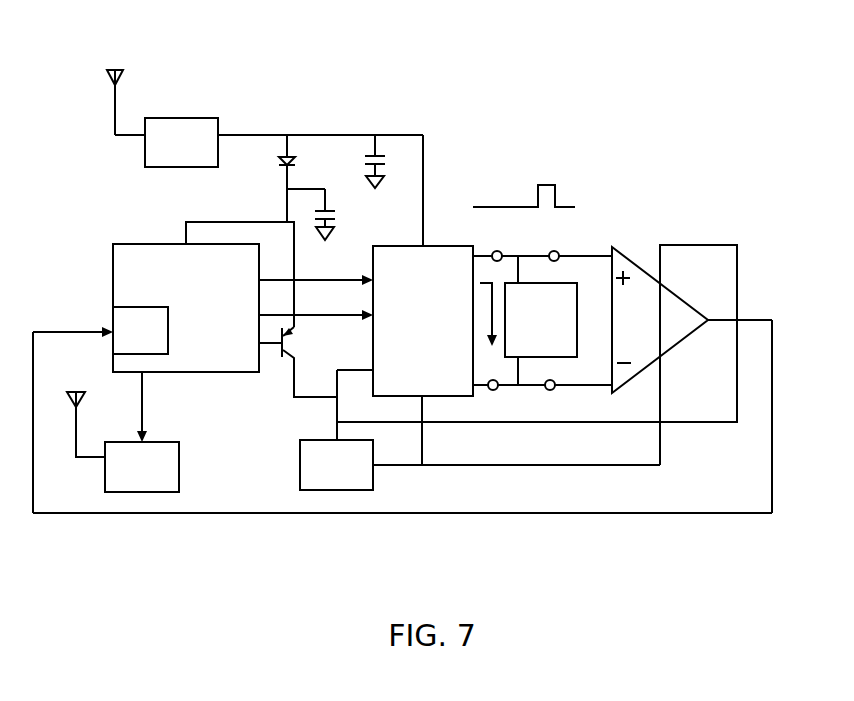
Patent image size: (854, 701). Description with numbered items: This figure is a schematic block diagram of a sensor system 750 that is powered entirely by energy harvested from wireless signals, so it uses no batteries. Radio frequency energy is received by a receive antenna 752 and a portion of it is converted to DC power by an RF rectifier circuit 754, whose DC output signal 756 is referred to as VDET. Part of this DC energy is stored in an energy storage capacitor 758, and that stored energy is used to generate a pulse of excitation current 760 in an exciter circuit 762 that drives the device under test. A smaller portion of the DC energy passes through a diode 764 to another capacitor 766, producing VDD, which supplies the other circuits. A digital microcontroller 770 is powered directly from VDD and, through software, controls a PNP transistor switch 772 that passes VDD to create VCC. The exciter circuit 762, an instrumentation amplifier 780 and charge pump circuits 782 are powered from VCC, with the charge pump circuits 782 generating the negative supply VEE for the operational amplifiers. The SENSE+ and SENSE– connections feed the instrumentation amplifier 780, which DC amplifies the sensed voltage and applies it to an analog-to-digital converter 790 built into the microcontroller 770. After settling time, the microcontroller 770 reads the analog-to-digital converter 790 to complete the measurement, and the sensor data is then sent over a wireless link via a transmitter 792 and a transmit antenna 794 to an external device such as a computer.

The sensor system 750 is at (614, 92).
The receive antenna 752 is at (118, 68).
The RF rectifier circuit 754 is at (202, 117).
The DC output signal 756 is at (311, 134).
The energy storage capacitor 758 is at (382, 152).
The pulse of excitation current 760 is at (480, 300).
The exciter circuit 762 is at (394, 245).
The diode 764 is at (283, 168).
The capacitor 766 is at (340, 210).
The digital microcontroller 770 is at (113, 270).
The PNP transistor switch 772 is at (285, 360).
The instrumentation amplifier 780 is at (637, 262).
The charge pump circuits 782 is at (324, 492).
The analog-to-digital converter 790 is at (155, 306).
The transmitter 792 is at (163, 440).
The transmit antenna 794 is at (80, 390).